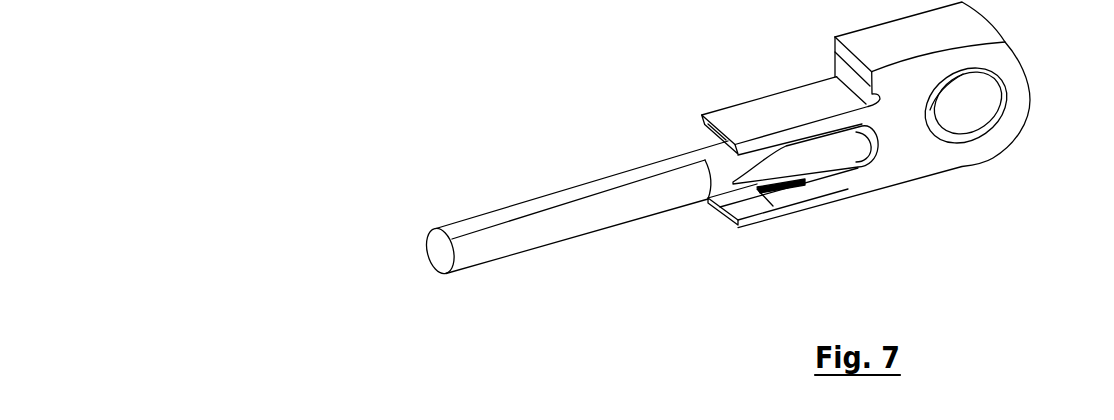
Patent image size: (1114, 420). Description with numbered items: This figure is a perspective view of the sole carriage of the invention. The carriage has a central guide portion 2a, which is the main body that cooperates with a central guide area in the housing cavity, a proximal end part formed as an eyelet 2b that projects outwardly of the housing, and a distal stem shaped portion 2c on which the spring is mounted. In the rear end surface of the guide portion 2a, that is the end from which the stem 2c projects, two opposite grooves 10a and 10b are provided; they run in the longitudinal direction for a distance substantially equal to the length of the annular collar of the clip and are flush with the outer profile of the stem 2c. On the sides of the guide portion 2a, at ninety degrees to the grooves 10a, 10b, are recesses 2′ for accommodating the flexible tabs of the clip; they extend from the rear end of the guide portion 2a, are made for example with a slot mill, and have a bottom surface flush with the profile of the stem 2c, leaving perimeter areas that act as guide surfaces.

The central guide portion 2a is at (775, 112).
The eyelet 2b is at (992, 52).
The stem shaped portion 2c is at (503, 242).
The recess 2′ is at (833, 157).
The groove 10a is at (745, 199).
The groove 10b is at (673, 135).